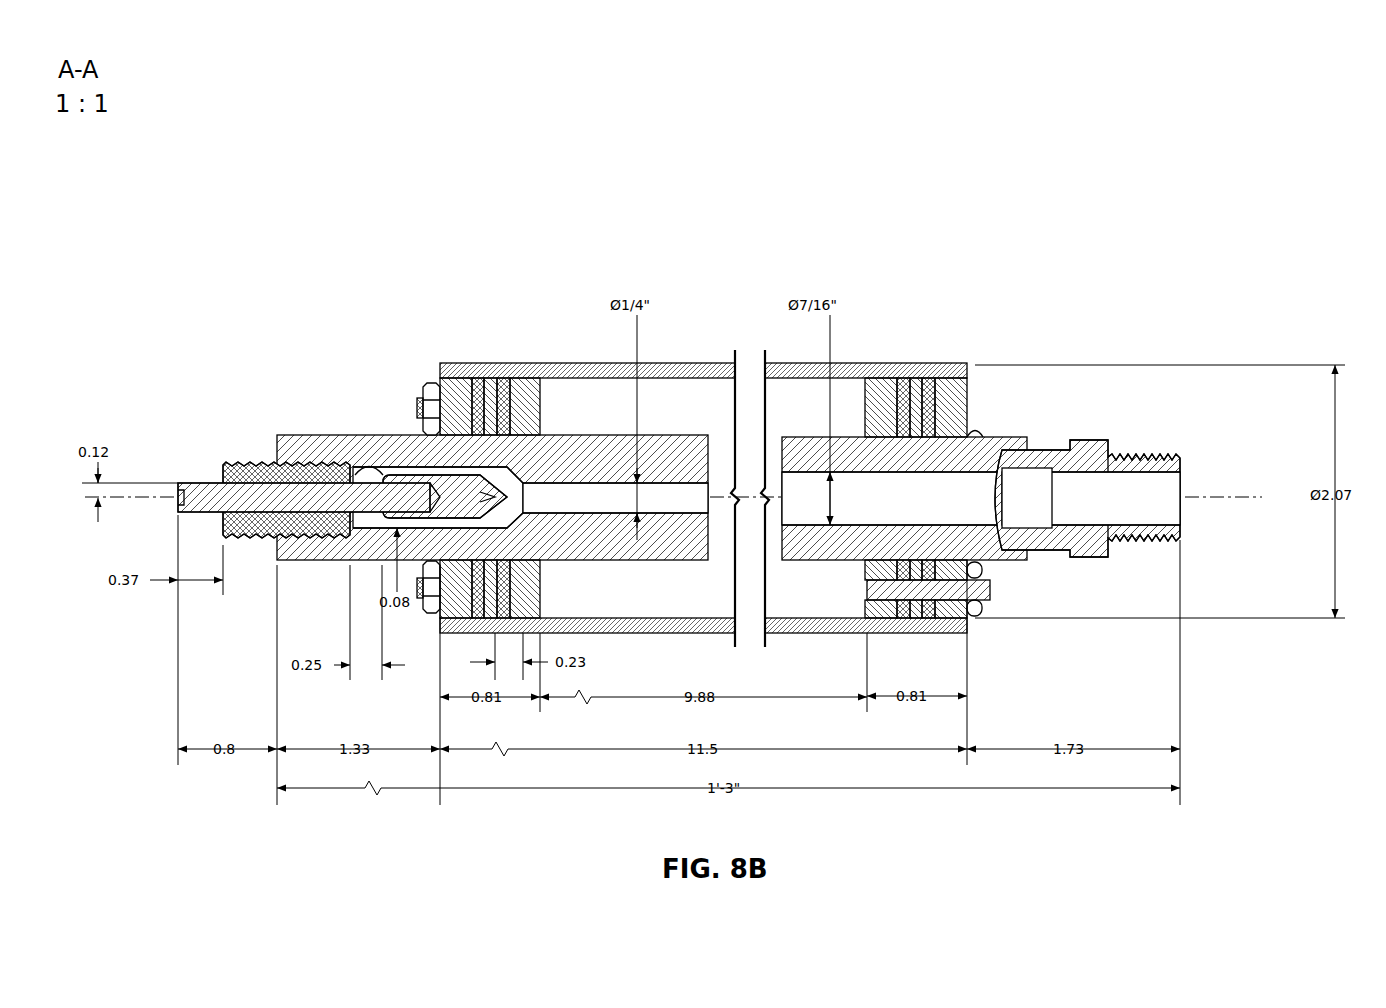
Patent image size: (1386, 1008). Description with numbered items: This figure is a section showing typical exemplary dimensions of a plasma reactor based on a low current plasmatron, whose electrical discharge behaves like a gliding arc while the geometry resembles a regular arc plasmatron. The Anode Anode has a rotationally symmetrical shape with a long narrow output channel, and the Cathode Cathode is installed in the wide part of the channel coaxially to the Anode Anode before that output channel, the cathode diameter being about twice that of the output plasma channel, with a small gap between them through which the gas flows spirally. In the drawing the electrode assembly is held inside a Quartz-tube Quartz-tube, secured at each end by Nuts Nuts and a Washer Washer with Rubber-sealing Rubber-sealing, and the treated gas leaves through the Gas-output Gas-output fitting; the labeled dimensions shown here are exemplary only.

The cathode Cathode is at (445, 472).
The nuts Nuts is at (427, 380).
The rubber sealing Rubber-sealing is at (993, 267).
The anode Anode is at (558, 433).
The quartz tube Quartz-tube is at (668, 363).
The washer Washer is at (878, 379).
The gas output Gas-output is at (1013, 435).